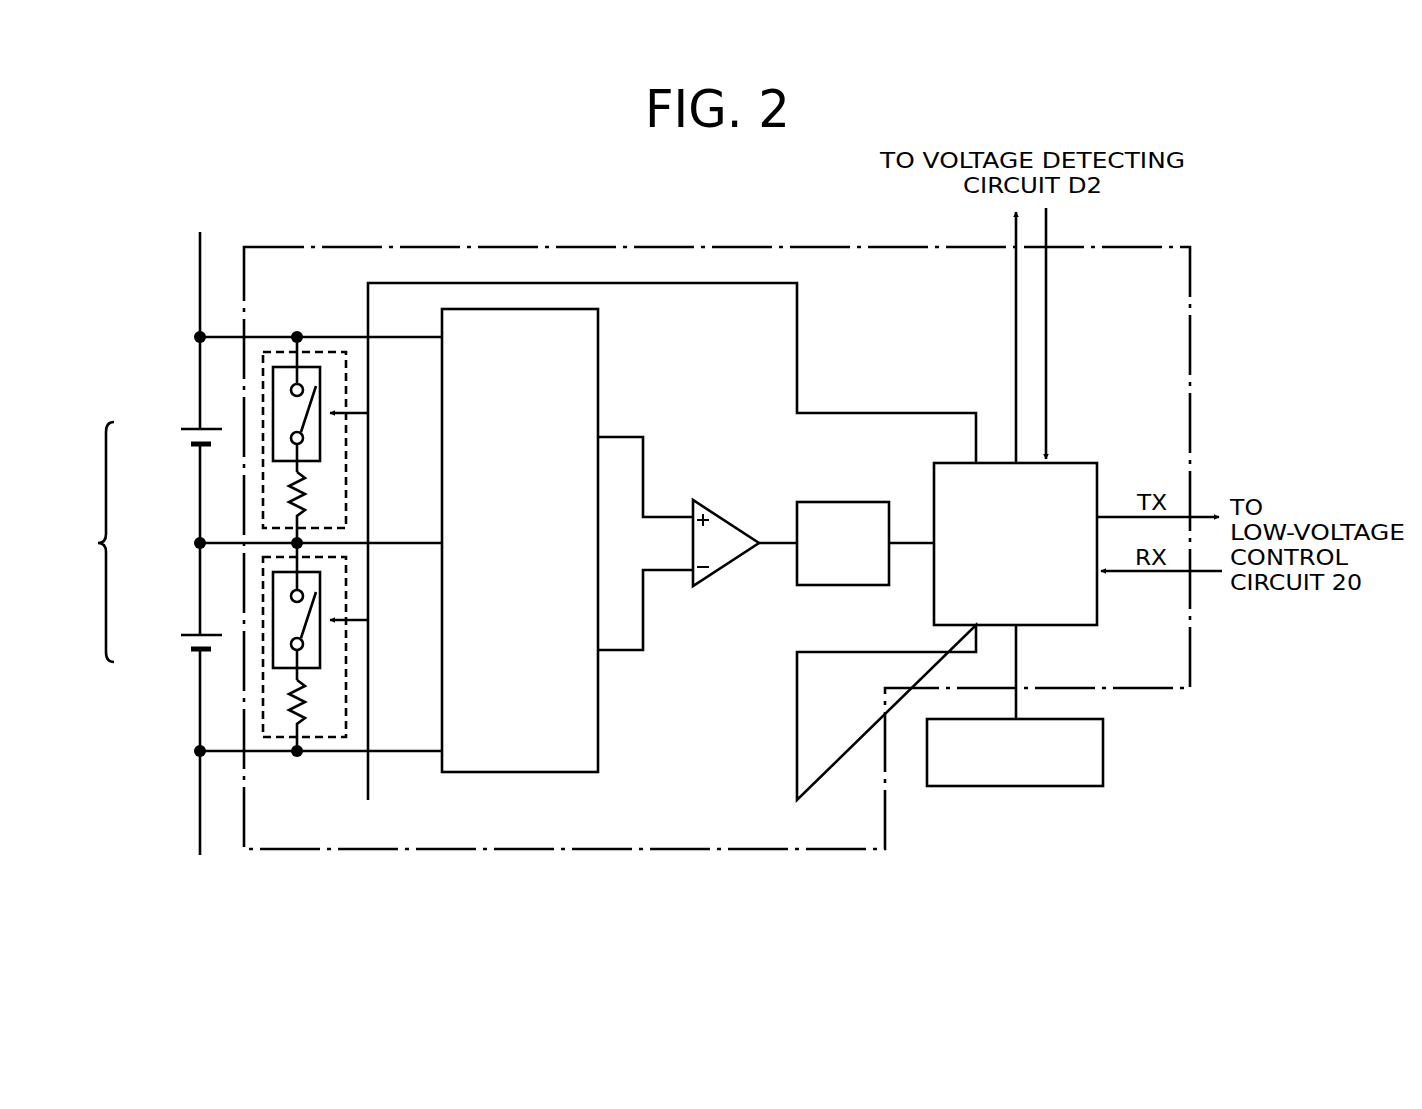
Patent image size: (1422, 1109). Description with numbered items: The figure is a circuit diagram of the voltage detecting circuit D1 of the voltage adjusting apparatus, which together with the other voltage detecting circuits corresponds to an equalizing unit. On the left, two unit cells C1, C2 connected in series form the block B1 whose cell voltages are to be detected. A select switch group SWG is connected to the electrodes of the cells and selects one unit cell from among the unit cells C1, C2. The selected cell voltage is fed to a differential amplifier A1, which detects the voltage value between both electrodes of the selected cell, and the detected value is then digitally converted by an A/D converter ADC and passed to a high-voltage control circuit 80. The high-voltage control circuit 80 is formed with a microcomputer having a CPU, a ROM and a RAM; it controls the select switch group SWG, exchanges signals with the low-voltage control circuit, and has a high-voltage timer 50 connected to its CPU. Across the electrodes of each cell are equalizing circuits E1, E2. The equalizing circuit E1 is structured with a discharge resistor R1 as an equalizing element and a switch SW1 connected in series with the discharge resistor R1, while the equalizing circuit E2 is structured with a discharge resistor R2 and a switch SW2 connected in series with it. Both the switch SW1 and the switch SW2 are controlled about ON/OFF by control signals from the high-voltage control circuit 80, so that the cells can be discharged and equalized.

The block B1 is at (87, 542).
The unit cell C1 is at (177, 645).
The unit cell C2 is at (177, 438).
The voltage detecting circuit D1 is at (713, 247).
The select switch group SWG is at (598, 370).
The switch SW1 is at (322, 593).
The switch SW2 is at (322, 437).
The discharge resistor R1 is at (317, 715).
The discharge resistor R2 is at (317, 507).
The equalizing circuit E1 is at (346, 707).
The equalizing circuit E2 is at (346, 507).
The differential amplifier A1 is at (718, 513).
The A/D converter ADC is at (897, 478).
The high-voltage control circuit 80 is at (1068, 463).
The high-voltage timer 50 is at (1103, 742).